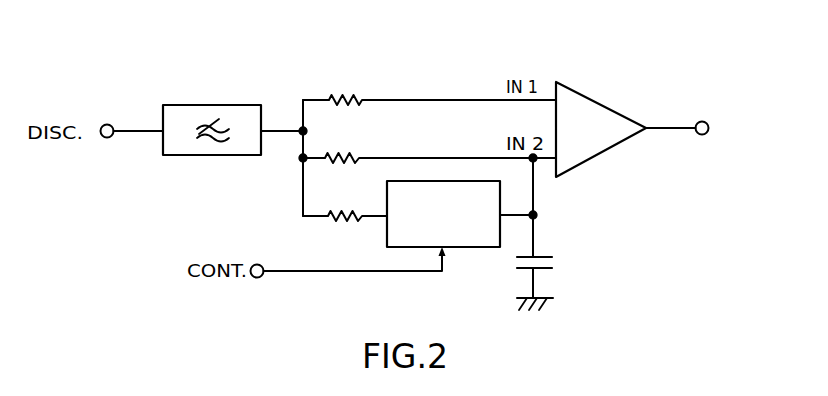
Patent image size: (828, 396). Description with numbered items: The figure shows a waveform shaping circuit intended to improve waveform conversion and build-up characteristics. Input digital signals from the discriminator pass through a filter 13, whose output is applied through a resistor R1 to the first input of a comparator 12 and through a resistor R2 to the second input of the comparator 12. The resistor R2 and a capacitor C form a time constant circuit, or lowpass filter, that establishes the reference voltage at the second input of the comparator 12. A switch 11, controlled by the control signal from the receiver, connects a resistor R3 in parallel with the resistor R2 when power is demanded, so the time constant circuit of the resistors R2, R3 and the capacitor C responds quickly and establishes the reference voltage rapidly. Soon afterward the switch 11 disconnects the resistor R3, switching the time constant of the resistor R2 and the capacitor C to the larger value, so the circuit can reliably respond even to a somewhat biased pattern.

The switch 11 is at (467, 248).
The comparator 12 is at (610, 108).
The filter 13 is at (208, 156).
The resistor R1 is at (429, 88).
The resistor R2 is at (429, 145).
The resistor R3 is at (345, 204).
The capacitor C is at (546, 263).